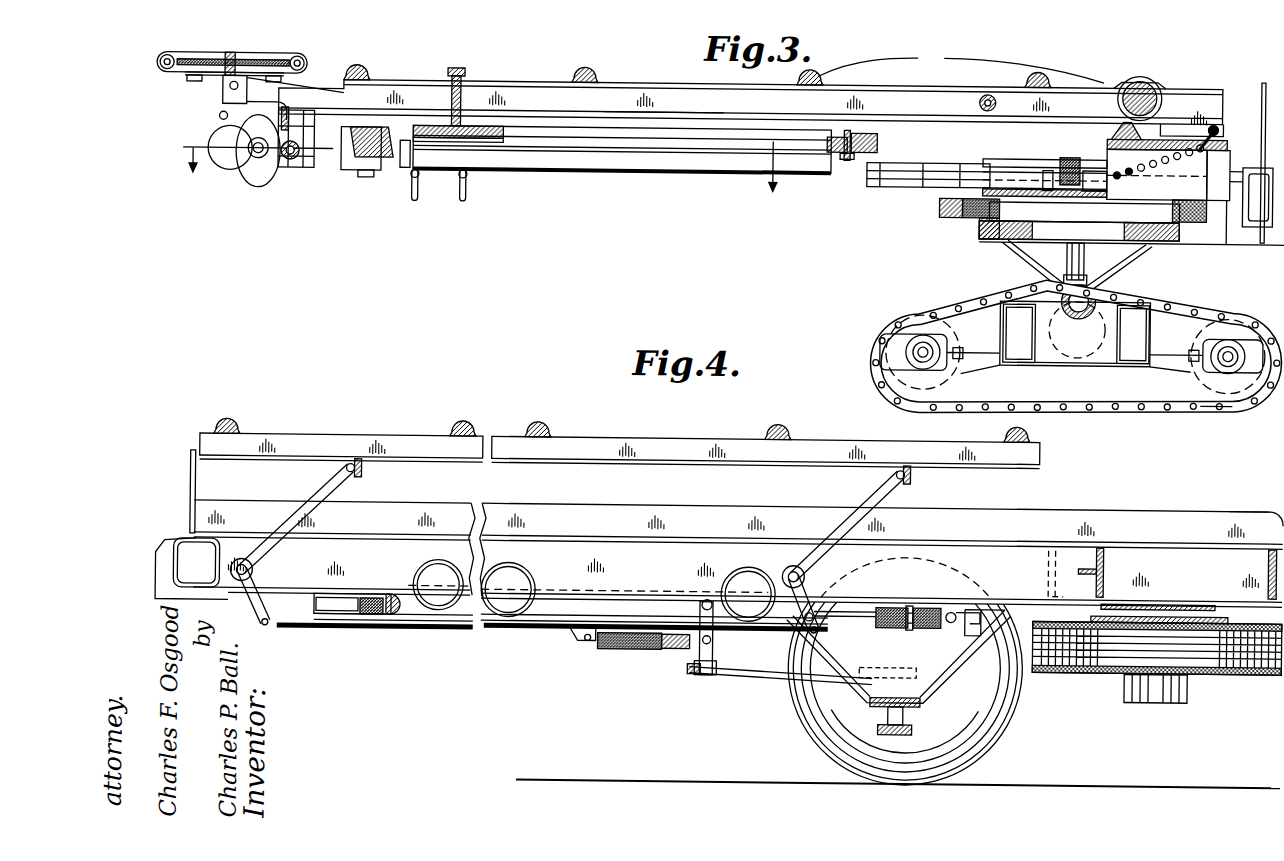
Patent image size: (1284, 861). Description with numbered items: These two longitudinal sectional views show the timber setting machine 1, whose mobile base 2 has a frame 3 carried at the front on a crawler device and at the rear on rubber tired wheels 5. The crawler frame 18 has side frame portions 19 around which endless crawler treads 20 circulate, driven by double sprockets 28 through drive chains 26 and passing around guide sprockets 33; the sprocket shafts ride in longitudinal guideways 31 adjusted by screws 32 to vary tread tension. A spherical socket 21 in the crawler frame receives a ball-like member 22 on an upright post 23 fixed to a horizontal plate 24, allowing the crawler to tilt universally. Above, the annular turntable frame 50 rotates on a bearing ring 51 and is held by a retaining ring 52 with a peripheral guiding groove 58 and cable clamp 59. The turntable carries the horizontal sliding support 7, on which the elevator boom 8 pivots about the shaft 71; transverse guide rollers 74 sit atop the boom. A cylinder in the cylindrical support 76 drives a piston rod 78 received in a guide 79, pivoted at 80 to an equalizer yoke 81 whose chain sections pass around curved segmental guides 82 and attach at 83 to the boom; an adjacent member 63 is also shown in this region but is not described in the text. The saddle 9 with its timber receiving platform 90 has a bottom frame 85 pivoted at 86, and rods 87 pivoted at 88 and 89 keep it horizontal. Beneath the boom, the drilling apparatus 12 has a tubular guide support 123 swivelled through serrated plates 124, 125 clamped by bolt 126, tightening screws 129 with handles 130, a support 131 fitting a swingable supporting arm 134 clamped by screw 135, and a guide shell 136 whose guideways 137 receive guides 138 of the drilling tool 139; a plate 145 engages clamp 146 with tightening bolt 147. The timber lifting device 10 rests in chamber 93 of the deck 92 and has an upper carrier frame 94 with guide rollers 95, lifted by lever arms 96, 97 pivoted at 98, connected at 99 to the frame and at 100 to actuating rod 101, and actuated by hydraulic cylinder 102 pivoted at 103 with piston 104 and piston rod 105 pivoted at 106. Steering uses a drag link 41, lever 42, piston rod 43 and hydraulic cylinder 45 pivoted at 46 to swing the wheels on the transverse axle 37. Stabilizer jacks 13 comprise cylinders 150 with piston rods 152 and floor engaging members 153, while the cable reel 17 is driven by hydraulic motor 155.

In FIG. 4, the timber setting machine 1 is at (1204, 512).
In FIG. 4, the mobile base 2 is at (1243, 522).
In FIG. 4, the frame 3 is at (706, 560).
In FIG. 4, the rubber tired wheels 5 is at (1012, 735).
In FIG. 3, the horizontal sliding support 7 is at (1020, 158).
In FIG. 3, the elevator boom 8 is at (530, 83).
In FIG. 3, the timber receiving saddle 9 is at (274, 58).
In FIG. 4, the timber lifting device 10 is at (680, 440).
In FIG. 3, the drilling apparatus 12 is at (243, 178).
In FIG. 3, the stabilizer jacks 13 is at (478, 175).
In FIG. 4, the stabilizer jacks 13 is at (343, 597).
In FIG. 4, the electric cable reel 17 is at (1257, 668).
In FIG. 3, the crawler frame 18 is at (1112, 362).
In FIG. 3, the side frame portions 19 is at (1180, 328).
In FIG. 3, the endless crawler treads 20 is at (880, 326).
In FIG. 3, the spherical socket 21 is at (1094, 290).
In FIG. 3, the ball-like member 22 is at (1036, 312).
In FIG. 3, the upright post 23 is at (1060, 273).
In FIG. 3, the horizontal plate 24 is at (1090, 240).
In FIG. 3, the endless drive chain 26 is at (1160, 312).
In FIG. 3, the double sprocket 28 is at (1215, 404).
In FIG. 3, the longitudinal guideways 31 is at (1246, 336).
In FIG. 3, the screws 32 is at (1192, 352).
In FIG. 3, the guide sprockets 33 is at (936, 318).
In FIG. 4, the transverse axle 37 is at (888, 718).
In FIG. 4, the drag link 41 is at (775, 677).
In FIG. 4, the lever 42 is at (717, 655).
In FIG. 4, the piston rod 43 is at (680, 648).
In FIG. 4, the hydraulic cylinder 45 is at (640, 649).
In FIG. 4, the pivot 46 is at (590, 642).
In FIG. 3, the turntable frame 50 is at (965, 172).
In FIG. 3, the bearing ring 51 is at (1186, 217).
In FIG. 3, the retaining ring 52 is at (975, 215).
In FIG. 3, the peripheral guiding groove 58 is at (1255, 222).
In FIG. 3, the clamp 59 is at (942, 213).
In FIG. 3, the tube 63 is at (920, 184).
In FIG. 3, the transversely disposed shaft 71 is at (1146, 78).
In FIG. 3, the transverse guide rollers 74 is at (961, 64).
In FIG. 3, the cylindrical support 76 is at (1262, 140).
In FIG. 3, the piston rod 78 is at (1030, 192).
In FIG. 3, the guide 79 is at (1226, 148).
In FIG. 3, the pivot 80 is at (1050, 186).
In FIG. 3, the equalizer yoke 81 is at (1088, 186).
In FIG. 3, the curved segmental guides 82 is at (1067, 152).
In FIG. 3, the chain attachment 83 is at (1216, 124).
In FIG. 3, the bottom frame 85 is at (221, 84).
In FIG. 3, the pivot 86 is at (226, 92).
In FIG. 3, the rods 87 is at (642, 111).
In FIG. 3, the rear pivots 88 is at (1126, 117).
In FIG. 3, the front pivots 89 is at (216, 121).
In FIG. 3, the timber receiving platform 90 is at (212, 60).
In FIG. 4, the timber carrying platform 92 is at (700, 515).
In FIG. 4, the chamber 93 is at (599, 518).
In FIG. 4, the upper carrier frame 94 is at (420, 444).
In FIG. 4, the transverse guide rollers 95 is at (781, 440).
In FIG. 4, the lever arms 96 is at (322, 500).
In FIG. 4, the lever arms 97 is at (880, 492).
In FIG. 4, the pivots 98 is at (795, 563).
In FIG. 4, the pivots 99 is at (903, 467).
In FIG. 4, the pivots 100 is at (817, 633).
In FIG. 4, the actuating rod 101 is at (545, 628).
In FIG. 4, the hydraulic cylinder 102 is at (920, 605).
In FIG. 4, the pivot 103 is at (960, 611).
In FIG. 4, the piston 104 is at (912, 627).
In FIG. 4, the piston rod 105 is at (845, 609).
In FIG. 4, the pivot 106 is at (818, 612).
In FIG. 3, the tubular guide support 123 is at (592, 160).
In FIG. 3, the upper circular plate 124 is at (472, 131).
In FIG. 3, the lower circular plate 125 is at (482, 145).
In FIG. 3, the central clamping bolt 126 is at (462, 100).
In FIG. 3, the tightening screws 129 is at (417, 182).
In FIG. 3, the handles 130 is at (458, 202).
In FIG. 3, the support 131 is at (402, 171).
In FIG. 3, the swingable supporting arm 134 is at (368, 130).
In FIG. 3, the screw 135 is at (362, 181).
In FIG. 3, the guide shell 136 is at (300, 172).
In FIG. 3, the longitudinal guideways 137 is at (284, 112).
In FIG. 3, the guides 138 is at (288, 164).
In FIG. 3, the drilling tool 139 is at (217, 168).
In FIG. 3, the plate 145 is at (816, 130).
In FIG. 3, the clamp 146 is at (862, 152).
In FIG. 3, the tightening bolt 147 is at (843, 160).
In FIG. 4, the hydraulic cylinders 150 is at (340, 617).
In FIG. 4, the piston rods 152 is at (374, 618).
In FIG. 4, the floor engaging members 153 is at (397, 618).
In FIG. 4, the hydraulic motor 155 is at (1162, 698).